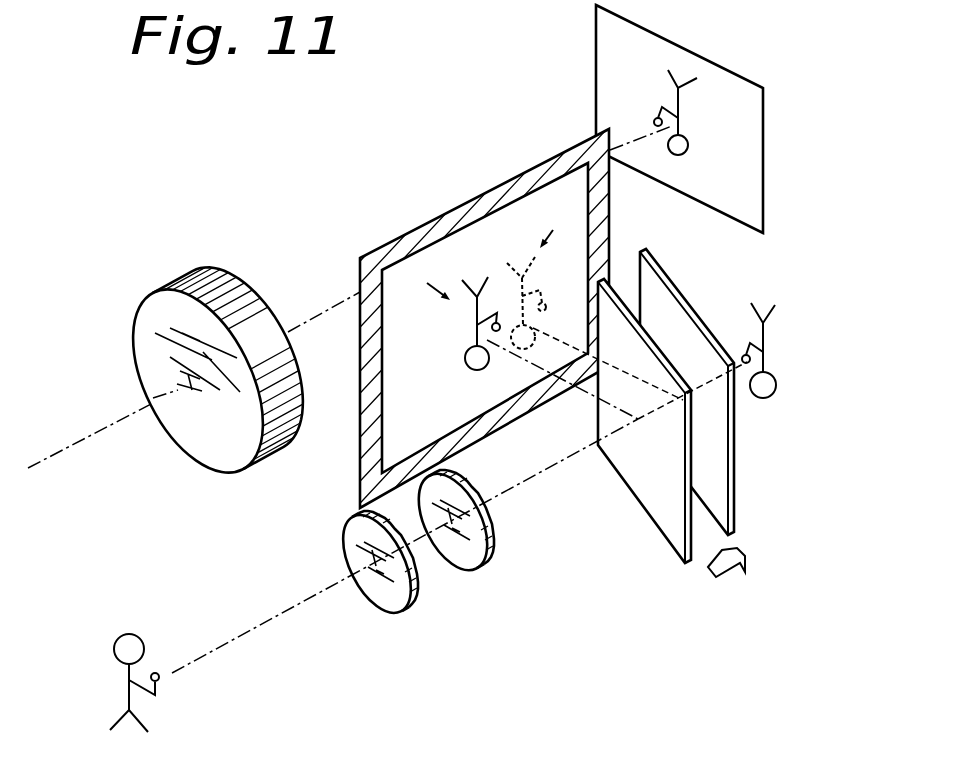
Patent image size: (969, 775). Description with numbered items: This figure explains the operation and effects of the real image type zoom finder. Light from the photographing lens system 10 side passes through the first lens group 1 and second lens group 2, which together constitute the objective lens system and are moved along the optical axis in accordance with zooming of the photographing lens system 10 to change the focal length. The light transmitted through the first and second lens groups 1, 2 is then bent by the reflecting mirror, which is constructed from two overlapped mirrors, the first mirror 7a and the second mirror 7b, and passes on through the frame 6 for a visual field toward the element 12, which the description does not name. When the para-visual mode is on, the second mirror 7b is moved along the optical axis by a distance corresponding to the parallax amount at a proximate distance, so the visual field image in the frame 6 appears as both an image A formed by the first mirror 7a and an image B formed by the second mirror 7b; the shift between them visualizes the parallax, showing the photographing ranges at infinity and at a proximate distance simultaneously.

The first lens group 1 is at (392, 613).
The second lens group 2 is at (470, 572).
The frame for a visual field 6 is at (437, 218).
The first mirror 7a is at (652, 520).
The second mirror 7b is at (735, 480).
The photographing lens system 10 is at (232, 286).
The display plate 12 is at (765, 167).